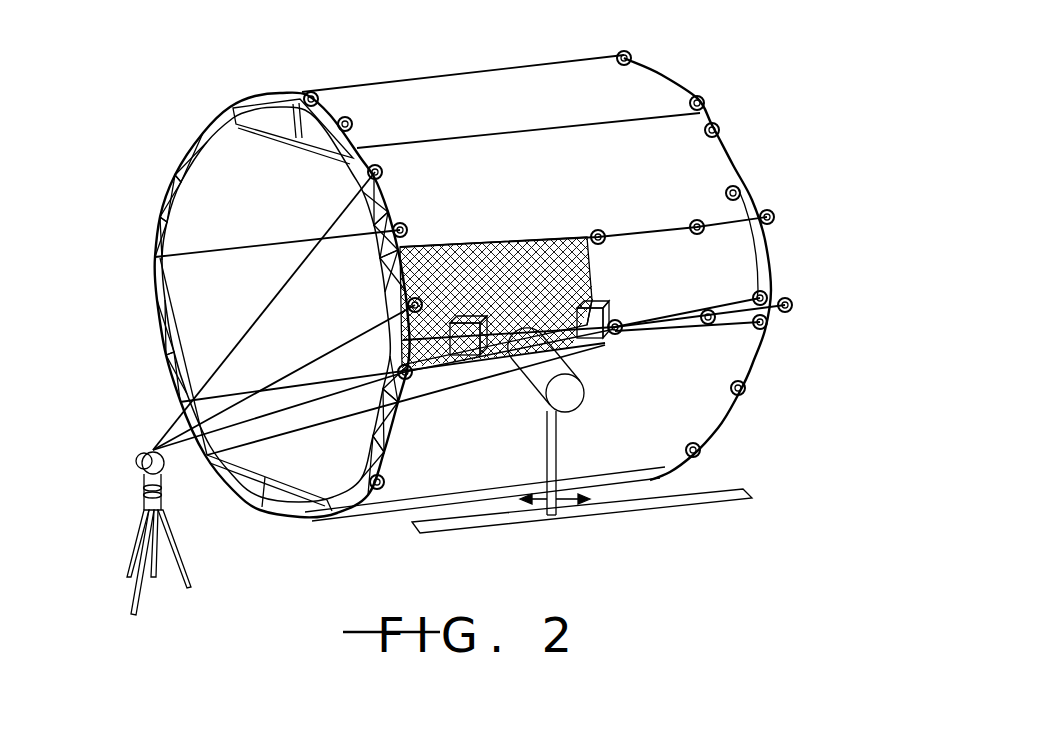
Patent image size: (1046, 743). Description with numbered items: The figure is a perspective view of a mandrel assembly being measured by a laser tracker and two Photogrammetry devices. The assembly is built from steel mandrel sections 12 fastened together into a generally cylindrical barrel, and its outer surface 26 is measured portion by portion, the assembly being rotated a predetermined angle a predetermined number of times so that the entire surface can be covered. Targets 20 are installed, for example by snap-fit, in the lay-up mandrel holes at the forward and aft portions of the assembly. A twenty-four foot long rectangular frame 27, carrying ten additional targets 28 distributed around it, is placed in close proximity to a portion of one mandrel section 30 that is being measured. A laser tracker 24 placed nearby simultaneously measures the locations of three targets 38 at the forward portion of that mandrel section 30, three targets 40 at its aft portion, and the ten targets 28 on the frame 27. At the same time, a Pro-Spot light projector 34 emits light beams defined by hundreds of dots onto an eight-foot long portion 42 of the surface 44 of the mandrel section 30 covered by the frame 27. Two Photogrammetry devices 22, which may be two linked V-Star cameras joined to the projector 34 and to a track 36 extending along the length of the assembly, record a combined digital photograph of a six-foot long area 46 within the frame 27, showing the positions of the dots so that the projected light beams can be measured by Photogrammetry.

The mandrel section 12 is at (222, 130).
The target 20 is at (398, 373).
The Photogrammetry device 22 is at (465, 360).
The laser tracker 24 is at (140, 511).
The outer surface 26 is at (715, 162).
The rectangular frame 27 is at (822, 275).
The additional target 28 is at (598, 229).
The mandrel section being measured 30 is at (632, 286).
The Pro-Spot light projector 34 is at (570, 401).
The track 36 is at (732, 500).
The forward target 38 is at (365, 169).
The aft target 40 is at (717, 127).
The eight-foot long portion 42 is at (496, 264).
The surface 44 is at (470, 277).
The six-foot long area 46 is at (545, 250).